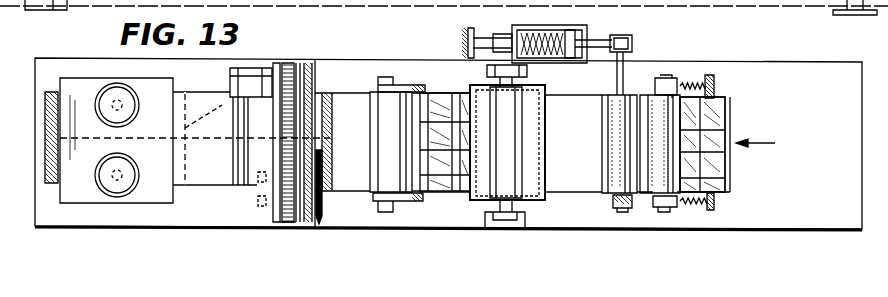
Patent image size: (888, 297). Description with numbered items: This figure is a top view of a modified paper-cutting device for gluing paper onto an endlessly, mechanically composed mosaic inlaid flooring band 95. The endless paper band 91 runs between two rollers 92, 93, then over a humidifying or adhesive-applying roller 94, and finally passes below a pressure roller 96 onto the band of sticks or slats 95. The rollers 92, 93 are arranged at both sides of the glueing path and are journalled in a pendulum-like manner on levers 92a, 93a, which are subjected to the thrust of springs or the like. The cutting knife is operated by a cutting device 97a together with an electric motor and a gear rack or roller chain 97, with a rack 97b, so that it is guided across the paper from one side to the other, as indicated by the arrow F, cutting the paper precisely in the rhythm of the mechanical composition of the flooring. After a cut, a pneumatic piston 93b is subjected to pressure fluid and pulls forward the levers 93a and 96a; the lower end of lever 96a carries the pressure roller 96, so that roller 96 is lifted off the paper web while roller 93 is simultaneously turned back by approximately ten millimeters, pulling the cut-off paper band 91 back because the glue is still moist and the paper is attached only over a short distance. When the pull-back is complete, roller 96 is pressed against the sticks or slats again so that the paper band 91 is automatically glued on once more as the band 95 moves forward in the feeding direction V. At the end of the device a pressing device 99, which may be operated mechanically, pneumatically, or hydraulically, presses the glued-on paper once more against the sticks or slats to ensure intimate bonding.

The pressing device 99 is at (104, 122).
The endless paper band 91 is at (221, 185).
The rack 97b is at (296, 82).
The cutting device 97a is at (290, 225).
The gear rack or roller chain 97 is at (325, 212).
The arrow F is at (323, 168).
The pressure roller 96 is at (370, 100).
The lever 96a is at (413, 78).
The mosaic inlaid flooring band 95 is at (440, 100).
The humidifying or adhesive-applying roller 94 is at (498, 190).
The pneumatic piston 93b is at (537, 57).
The lever 93a is at (632, 45).
The roller 93 is at (607, 178).
The lever 92a is at (668, 80).
The roller 92 is at (680, 120).
The direction of movement V is at (764, 145).